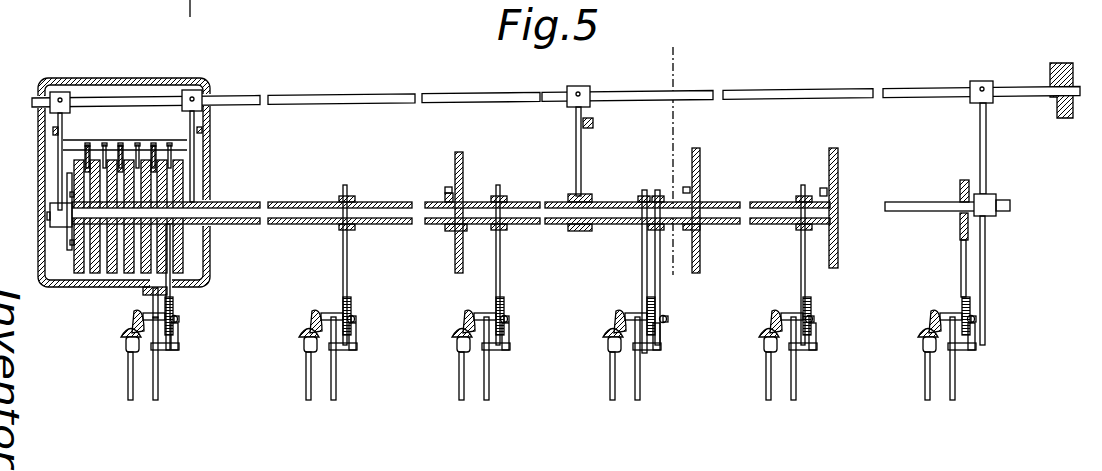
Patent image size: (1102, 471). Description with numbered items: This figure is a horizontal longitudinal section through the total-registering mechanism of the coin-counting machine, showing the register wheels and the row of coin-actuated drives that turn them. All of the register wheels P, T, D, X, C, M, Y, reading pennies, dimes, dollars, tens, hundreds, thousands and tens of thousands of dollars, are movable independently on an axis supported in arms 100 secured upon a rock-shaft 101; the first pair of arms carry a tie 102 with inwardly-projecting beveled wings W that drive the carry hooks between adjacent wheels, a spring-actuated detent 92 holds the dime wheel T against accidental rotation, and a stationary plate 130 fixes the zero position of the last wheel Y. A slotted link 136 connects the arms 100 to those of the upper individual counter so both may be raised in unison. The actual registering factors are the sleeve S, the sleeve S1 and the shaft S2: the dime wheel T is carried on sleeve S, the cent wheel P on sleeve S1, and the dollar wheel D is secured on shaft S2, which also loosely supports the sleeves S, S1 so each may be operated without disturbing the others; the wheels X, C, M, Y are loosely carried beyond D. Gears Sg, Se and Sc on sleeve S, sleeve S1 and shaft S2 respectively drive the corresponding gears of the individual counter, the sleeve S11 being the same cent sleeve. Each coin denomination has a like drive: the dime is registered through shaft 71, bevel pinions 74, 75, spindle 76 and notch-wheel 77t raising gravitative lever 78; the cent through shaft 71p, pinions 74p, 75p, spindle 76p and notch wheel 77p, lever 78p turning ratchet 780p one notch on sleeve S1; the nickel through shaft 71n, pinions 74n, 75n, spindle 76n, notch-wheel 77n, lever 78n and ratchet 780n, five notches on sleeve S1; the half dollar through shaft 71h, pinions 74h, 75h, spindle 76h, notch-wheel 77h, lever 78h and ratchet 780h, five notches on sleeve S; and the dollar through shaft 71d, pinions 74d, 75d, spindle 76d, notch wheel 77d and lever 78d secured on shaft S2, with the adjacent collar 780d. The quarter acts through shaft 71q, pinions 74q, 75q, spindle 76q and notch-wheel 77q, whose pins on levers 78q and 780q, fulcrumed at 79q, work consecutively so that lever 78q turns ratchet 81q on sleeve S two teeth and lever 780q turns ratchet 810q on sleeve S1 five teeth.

The arms 100 is at (58, 190).
The rock-shaft 101 is at (496, 90).
The tie 102 is at (180, 143).
The stationary plate 130 is at (66, 238).
The slotted link 136 is at (590, 120).
The spring-actuated detent 92 is at (177, 157).
The gravitative lever 78 is at (170, 298).
The notch-wheel 77t is at (175, 333).
The spindle 76 is at (176, 320).
The bevel pinion 75 is at (131, 318).
The bevel pinion 74 is at (118, 334).
The shaft 71 is at (128, 382).
The ratchet 780p is at (346, 185).
The lever 78p is at (348, 268).
The notch wheel 77p is at (353, 302).
The spindle 76p is at (355, 318).
The bevel pinion 75p is at (319, 312).
The bevel pinion 74p is at (300, 328).
The shaft 71p is at (308, 387).
The ratchet 780n is at (499, 185).
The lever 78n is at (501, 270).
The notch-wheel 77n is at (504, 330).
The spindle 76n is at (508, 318).
The bevel pinion 75n is at (469, 308).
The bevel pinion 74n is at (457, 327).
The shaft 71n is at (462, 375).
The ratchet 810q is at (642, 187).
The ratchet 81q is at (660, 187).
The lever 780q is at (645, 260).
The lever 78q is at (662, 280).
The notch-wheel 77q is at (653, 288).
The spindle 76q is at (667, 313).
The bevel pinion 75q is at (619, 313).
The bevel pinion 74q is at (612, 327).
The shaft 71q is at (617, 378).
The lever fulcrum 79q is at (667, 345).
The ratchet 780h is at (805, 185).
The lever 78h is at (803, 250).
The notch-wheel 77h is at (812, 290).
The spindle 76h is at (813, 312).
The bevel pinion 75h is at (779, 305).
The bevel pinion 74h is at (769, 322).
The shaft 71h is at (775, 377).
The collar 780d is at (963, 180).
The lever 78d is at (970, 247).
The notch wheel 77d is at (968, 292).
The spindle 76d is at (977, 310).
The pinion 75d is at (940, 303).
The pinion 74d is at (927, 323).
The shaft 71d is at (932, 373).
The dime-registering wheel T is at (183, 250).
The cent-registering wheel P is at (180, 266).
The wings W is at (152, 146).
The sleeve S is at (718, 198).
The sleeve S1 is at (310, 192).
The gear Se is at (461, 152).
The shaft section S11 is at (618, 187).
The gear Sg is at (697, 157).
The gear Sc is at (815, 201).
The shaft S2 is at (918, 202).
The register wheel Y is at (73, 268).
The register wheel M is at (90, 273).
The register wheel X is at (123, 273).
The dollar-registering wheel D is at (147, 272).
The register wheel C is at (95, 300).